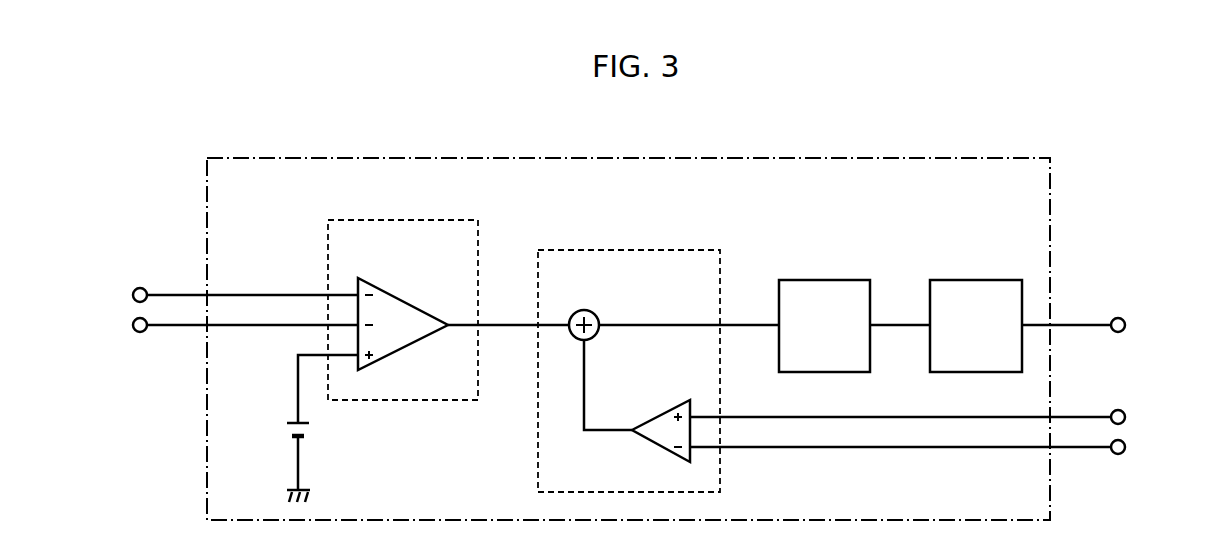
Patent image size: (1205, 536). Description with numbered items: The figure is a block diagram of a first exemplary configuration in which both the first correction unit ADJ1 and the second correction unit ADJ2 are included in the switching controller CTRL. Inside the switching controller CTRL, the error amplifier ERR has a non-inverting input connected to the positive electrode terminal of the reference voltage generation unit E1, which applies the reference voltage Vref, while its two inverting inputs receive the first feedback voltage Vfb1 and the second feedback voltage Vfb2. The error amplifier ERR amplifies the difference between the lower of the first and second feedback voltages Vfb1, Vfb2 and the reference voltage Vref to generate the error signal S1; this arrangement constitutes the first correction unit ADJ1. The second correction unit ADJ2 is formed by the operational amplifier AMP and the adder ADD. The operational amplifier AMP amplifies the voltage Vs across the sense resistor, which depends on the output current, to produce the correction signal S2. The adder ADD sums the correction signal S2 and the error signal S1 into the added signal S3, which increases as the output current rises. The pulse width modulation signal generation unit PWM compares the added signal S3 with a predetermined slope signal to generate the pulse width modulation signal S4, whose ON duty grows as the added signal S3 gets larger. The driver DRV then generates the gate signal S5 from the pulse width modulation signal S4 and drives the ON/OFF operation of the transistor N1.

The switching controller CTRL is at (632, 157).
The first correction unit ADJ1 is at (407, 218).
The second correction unit ADJ2 is at (631, 249).
The error amplifier ERR is at (408, 300).
The adder ADD is at (585, 309).
The operational amplifier AMP is at (664, 411).
The pulse width modulation signal generation unit PWM is at (824, 326).
The driver DRV is at (976, 326).
The reference voltage generation unit E1 is at (285, 433).
The error signal S1 is at (508, 308).
The correction signal S2 is at (600, 401).
The added signal S3 is at (689, 308).
The pulse width modulation signal S4 is at (900, 308).
The gate signal S5 is at (1066, 308).
The transistor N1 is at (1138, 328).
The first feedback voltage Vfb1 is at (214, 295).
The second feedback voltage Vfb2 is at (214, 325).
The reference voltage Vref is at (297, 381).
The voltage across the sense resistor Vs is at (927, 432).